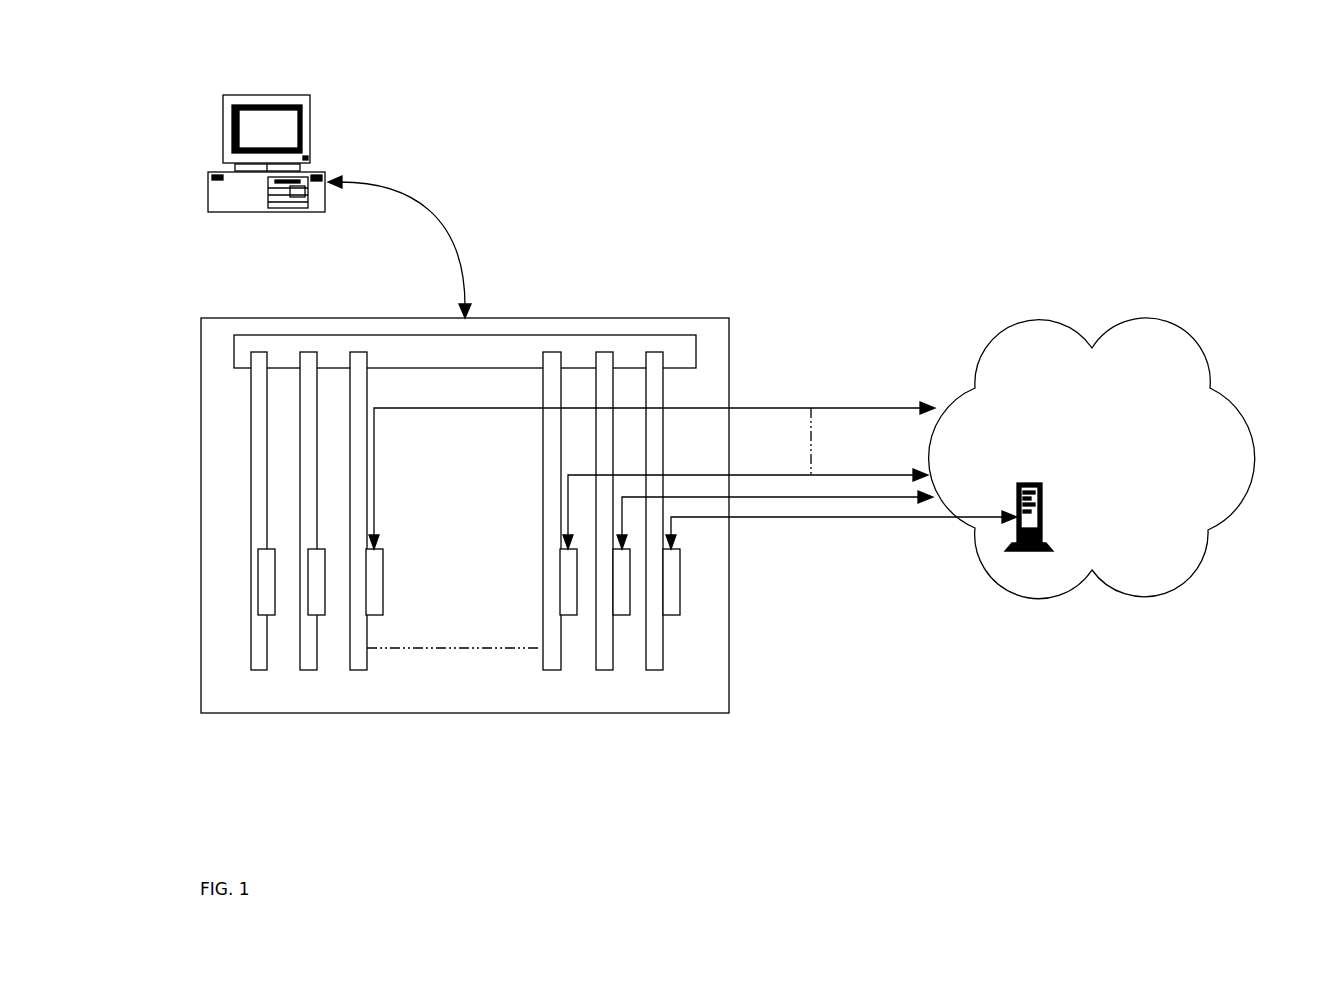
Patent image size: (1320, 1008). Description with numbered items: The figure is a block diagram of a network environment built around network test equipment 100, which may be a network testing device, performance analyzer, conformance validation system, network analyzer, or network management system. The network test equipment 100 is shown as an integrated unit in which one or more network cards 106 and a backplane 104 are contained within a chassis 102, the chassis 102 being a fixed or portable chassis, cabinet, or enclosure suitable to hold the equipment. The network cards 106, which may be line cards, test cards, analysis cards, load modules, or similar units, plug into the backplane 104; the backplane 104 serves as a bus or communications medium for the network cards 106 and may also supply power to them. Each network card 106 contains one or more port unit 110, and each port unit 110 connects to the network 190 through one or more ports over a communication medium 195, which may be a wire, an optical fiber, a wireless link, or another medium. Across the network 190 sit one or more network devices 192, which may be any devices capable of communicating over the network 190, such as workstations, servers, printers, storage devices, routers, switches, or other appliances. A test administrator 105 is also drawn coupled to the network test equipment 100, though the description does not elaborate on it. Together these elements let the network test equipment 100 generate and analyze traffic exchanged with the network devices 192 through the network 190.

The network test equipment 100 is at (666, 115).
The chassis 102 is at (582, 318).
The backplane 104 is at (647, 335).
The test administrator 105 is at (266, 179).
The network cards 106 is at (234, 672).
The port unit 110 is at (668, 615).
The network 190 is at (1092, 485).
The network devices 192 is at (1042, 517).
The communication medium 195 is at (797, 519).